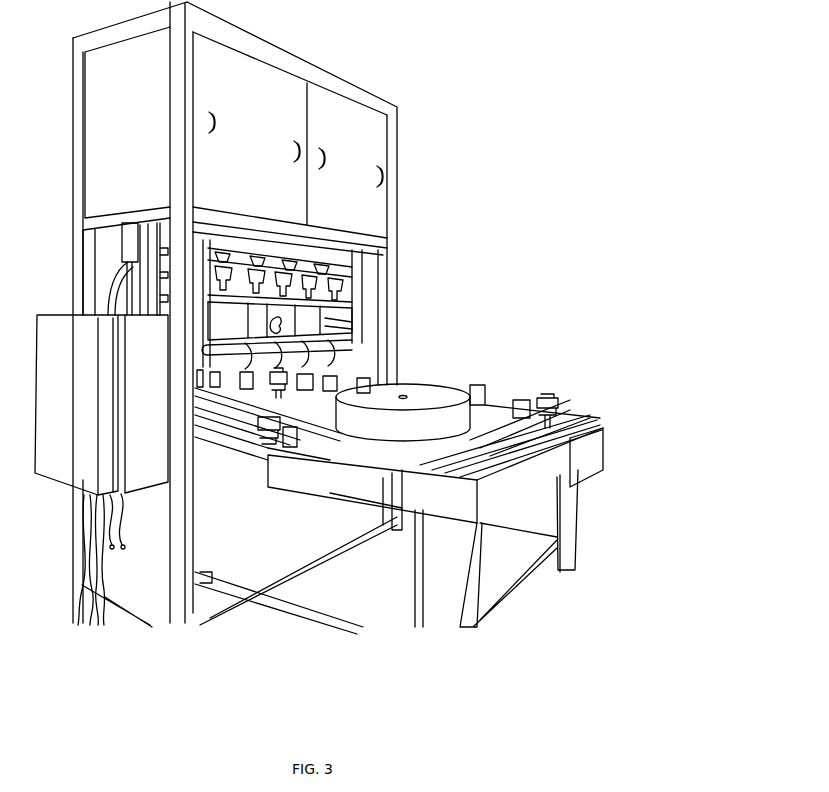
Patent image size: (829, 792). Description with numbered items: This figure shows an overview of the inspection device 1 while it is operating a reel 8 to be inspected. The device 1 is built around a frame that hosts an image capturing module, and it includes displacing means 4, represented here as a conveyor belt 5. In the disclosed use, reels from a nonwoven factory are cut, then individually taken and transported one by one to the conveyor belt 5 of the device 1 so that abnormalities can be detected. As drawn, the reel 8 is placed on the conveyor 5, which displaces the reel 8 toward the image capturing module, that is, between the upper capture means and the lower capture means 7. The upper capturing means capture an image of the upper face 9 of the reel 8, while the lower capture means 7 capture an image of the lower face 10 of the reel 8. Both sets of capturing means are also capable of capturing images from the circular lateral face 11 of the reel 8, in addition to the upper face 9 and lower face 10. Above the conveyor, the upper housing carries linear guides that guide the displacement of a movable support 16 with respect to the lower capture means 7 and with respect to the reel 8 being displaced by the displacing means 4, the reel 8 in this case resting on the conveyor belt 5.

The device 1 is at (490, 160).
The displacing means 4 is at (594, 446).
The conveyor belt 5 is at (481, 497).
The lower capture means 7 is at (244, 409).
The reel 8 is at (454, 383).
The upper face 9 is at (442, 397).
The lower face 10 is at (375, 437).
The circular lateral face 11 is at (347, 418).
The movable support 16 is at (338, 346).